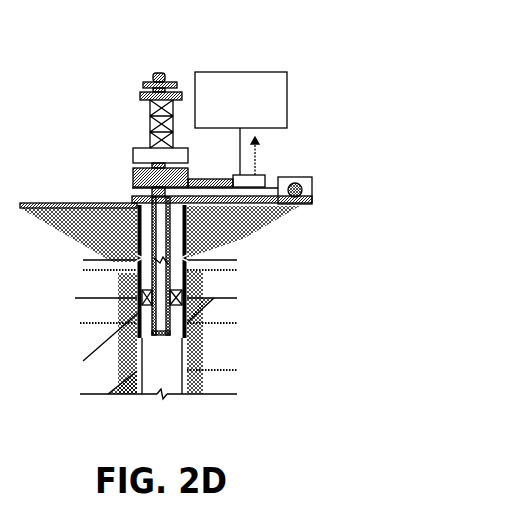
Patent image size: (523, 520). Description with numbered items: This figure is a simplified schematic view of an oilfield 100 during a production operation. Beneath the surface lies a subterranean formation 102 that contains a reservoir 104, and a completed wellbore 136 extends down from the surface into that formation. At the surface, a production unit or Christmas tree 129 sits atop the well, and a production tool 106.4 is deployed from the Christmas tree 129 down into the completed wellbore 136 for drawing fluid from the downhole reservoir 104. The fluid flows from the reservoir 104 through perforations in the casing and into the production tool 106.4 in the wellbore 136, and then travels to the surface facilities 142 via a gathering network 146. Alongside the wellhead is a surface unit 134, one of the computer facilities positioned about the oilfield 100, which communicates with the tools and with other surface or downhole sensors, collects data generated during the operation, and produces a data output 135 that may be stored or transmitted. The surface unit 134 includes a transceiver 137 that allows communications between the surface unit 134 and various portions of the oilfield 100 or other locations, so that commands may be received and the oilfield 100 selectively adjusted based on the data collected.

The oilfield 100 is at (82, 117).
The subterranean formation 102 is at (251, 306).
The reservoir 104 is at (240, 357).
The production tool 106.4 is at (137, 323).
The Christmas tree 129 is at (158, 72).
The surface unit 134 is at (234, 176).
The data output 135 is at (258, 72).
The wellbore 136 is at (180, 236).
The transceiver 137 is at (258, 156).
The surface facilities 142 is at (312, 188).
The gathering network 146 is at (272, 200).